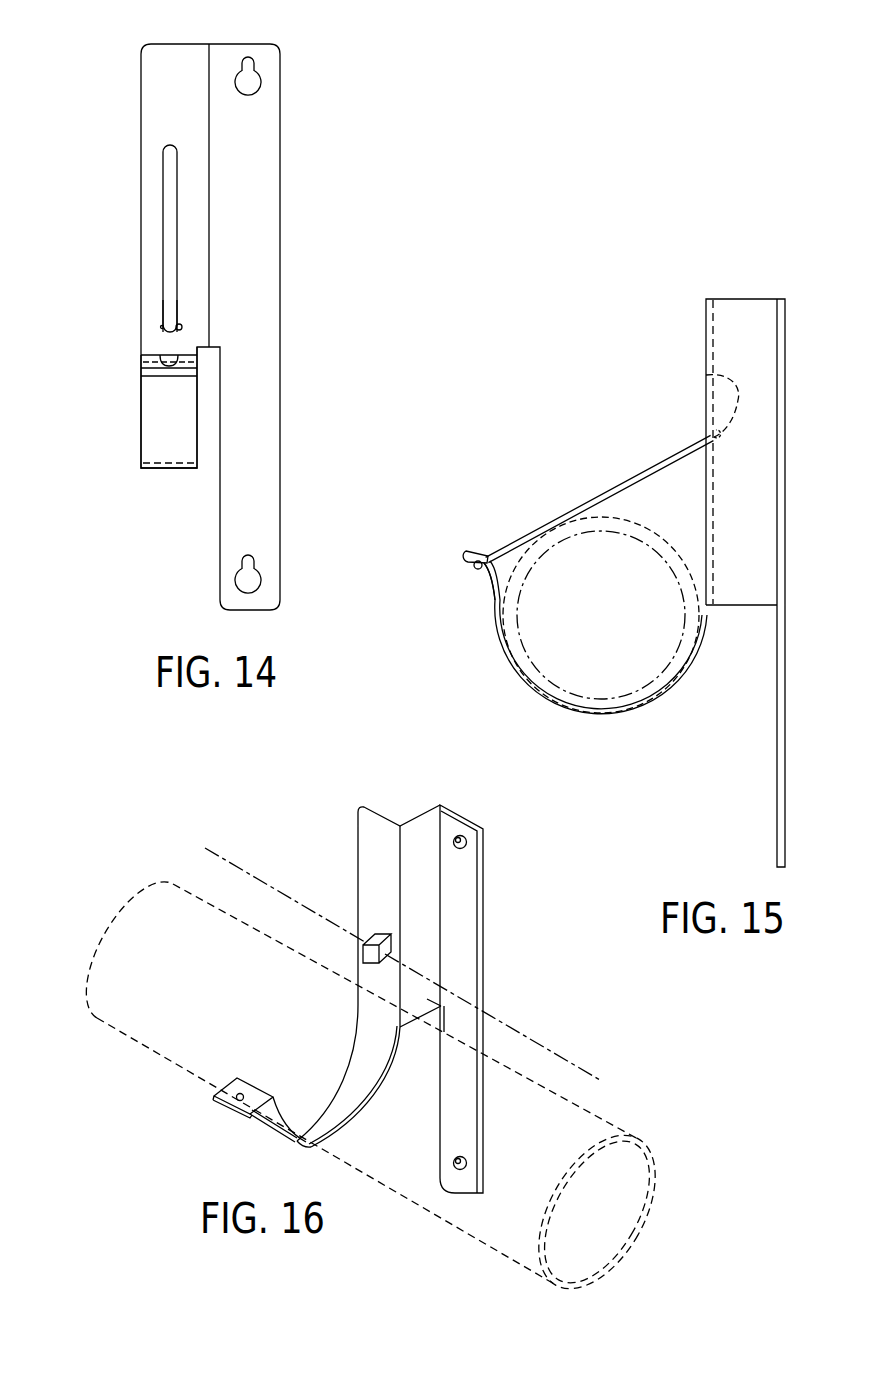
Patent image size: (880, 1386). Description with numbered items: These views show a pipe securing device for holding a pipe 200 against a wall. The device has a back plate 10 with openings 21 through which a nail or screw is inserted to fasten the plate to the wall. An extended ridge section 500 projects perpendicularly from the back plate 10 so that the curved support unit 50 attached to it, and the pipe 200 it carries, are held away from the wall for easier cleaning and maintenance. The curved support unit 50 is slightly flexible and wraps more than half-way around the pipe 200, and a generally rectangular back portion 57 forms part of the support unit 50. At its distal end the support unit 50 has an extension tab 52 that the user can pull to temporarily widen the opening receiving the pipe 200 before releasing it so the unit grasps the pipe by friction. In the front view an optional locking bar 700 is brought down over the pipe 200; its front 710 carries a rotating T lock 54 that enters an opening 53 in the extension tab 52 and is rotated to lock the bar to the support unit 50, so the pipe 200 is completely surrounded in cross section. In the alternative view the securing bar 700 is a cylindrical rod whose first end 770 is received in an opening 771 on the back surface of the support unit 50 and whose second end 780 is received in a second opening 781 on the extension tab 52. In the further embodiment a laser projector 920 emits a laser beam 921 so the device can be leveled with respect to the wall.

In FIG. 16, the back plate 10 is at (460, 953).
In FIG. 16, the opening 21 is at (470, 843).
In FIG. 16, the curved support unit 50 is at (340, 1117).
In FIG. 14, the extension tab 52 is at (150, 355).
In FIG. 15, the extension tab 52 is at (470, 551).
In FIG. 16, the extension tab 52 is at (238, 1083).
In FIG. 14, the opening 53 is at (167, 375).
In FIG. 14, the rotating T lock 54 is at (162, 327).
In FIG. 14, the generally rectangular back portion 57 is at (170, 468).
In FIG. 15, the generally rectangular back portion 57 is at (652, 712).
In FIG. 16, the generally rectangular back portion 57 is at (372, 826).
In FIG. 15, the pipe 200 is at (623, 635).
In FIG. 16, the pipe 200 is at (148, 886).
In FIG. 16, the extended ridge section 500 is at (442, 1028).
In FIG. 14, the locking bar 700 is at (168, 218).
In FIG. 15, the locking bar 700 is at (598, 494).
In FIG. 14, the front of the locking bar 710 is at (170, 311).
In FIG. 15, the first end 770 is at (705, 375).
In FIG. 15, the opening 771 is at (700, 437).
In FIG. 15, the second end 780 is at (480, 572).
In FIG. 15, the second opening 781 is at (480, 560).
In FIG. 16, the laser projector 920 is at (376, 932).
In FIG. 16, the laser beam 921 is at (268, 885).